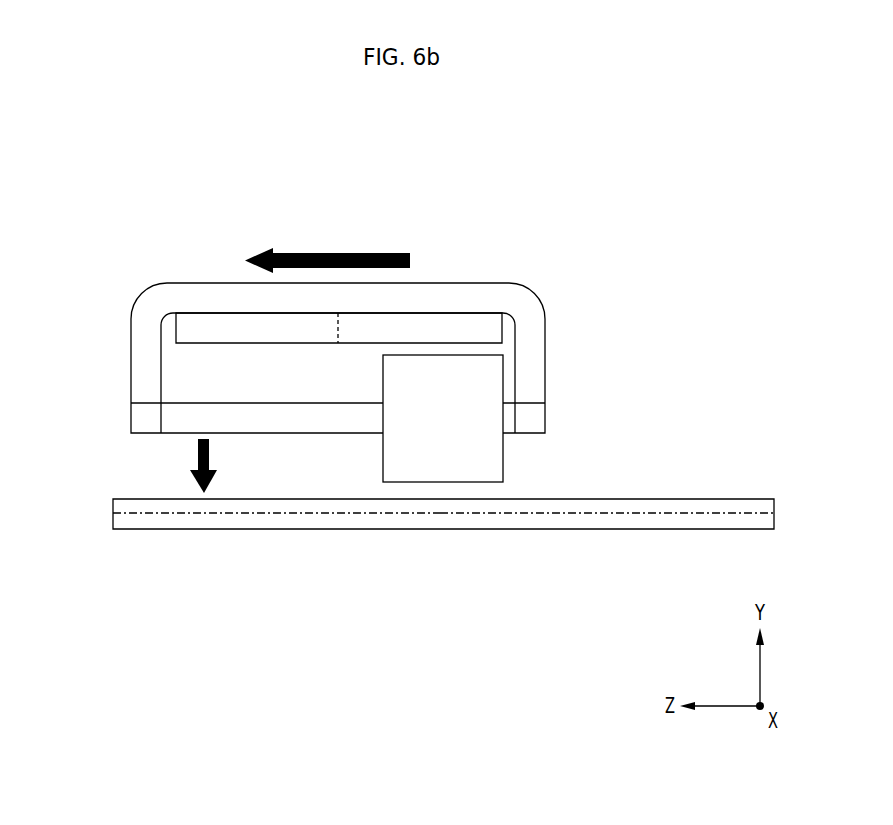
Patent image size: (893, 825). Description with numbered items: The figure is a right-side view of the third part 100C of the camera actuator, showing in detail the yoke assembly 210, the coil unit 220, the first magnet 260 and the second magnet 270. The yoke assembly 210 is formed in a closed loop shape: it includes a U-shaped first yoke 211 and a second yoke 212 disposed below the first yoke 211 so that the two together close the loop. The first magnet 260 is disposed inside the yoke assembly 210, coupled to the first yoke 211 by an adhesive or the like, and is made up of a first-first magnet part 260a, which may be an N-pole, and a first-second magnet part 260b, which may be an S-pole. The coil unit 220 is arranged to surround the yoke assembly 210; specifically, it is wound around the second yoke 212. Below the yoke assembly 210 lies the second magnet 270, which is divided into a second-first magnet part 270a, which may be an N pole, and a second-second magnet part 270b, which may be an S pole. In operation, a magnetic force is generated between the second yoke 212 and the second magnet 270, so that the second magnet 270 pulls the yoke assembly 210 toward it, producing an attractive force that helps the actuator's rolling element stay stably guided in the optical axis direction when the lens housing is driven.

The third part 100C is at (162, 137).
The yoke assembly 210 is at (62, 241).
The first yoke 211 is at (213, 297).
The second yoke 212 is at (192, 417).
The coil unit 220 is at (485, 382).
The first magnet 260 is at (470, 185).
The first-first magnet part 260a is at (238, 327).
The first-second magnet part 260b is at (438, 327).
The second magnet 270 is at (442, 613).
The second-first magnet part 270a is at (318, 507).
The second-second magnet part 270b is at (422, 505).